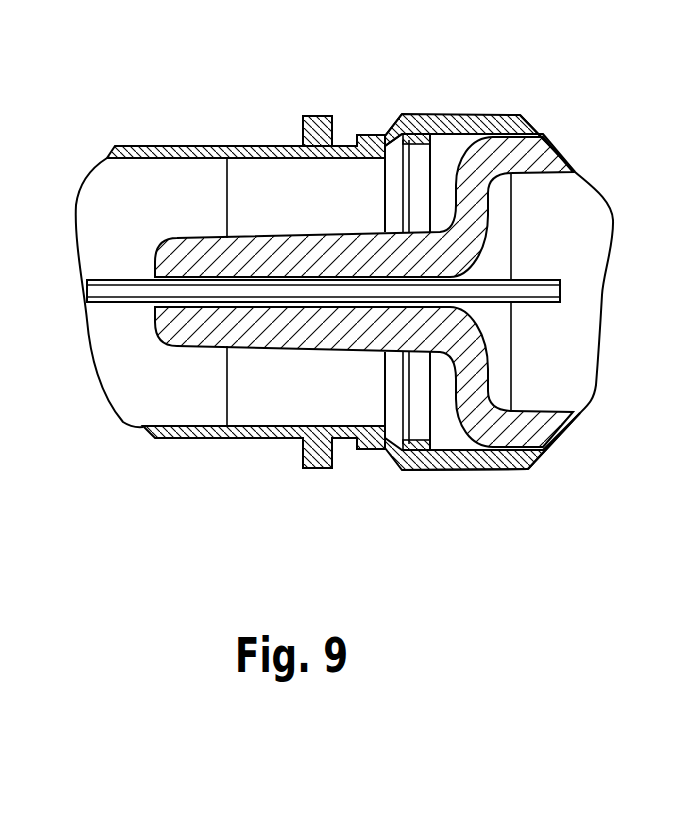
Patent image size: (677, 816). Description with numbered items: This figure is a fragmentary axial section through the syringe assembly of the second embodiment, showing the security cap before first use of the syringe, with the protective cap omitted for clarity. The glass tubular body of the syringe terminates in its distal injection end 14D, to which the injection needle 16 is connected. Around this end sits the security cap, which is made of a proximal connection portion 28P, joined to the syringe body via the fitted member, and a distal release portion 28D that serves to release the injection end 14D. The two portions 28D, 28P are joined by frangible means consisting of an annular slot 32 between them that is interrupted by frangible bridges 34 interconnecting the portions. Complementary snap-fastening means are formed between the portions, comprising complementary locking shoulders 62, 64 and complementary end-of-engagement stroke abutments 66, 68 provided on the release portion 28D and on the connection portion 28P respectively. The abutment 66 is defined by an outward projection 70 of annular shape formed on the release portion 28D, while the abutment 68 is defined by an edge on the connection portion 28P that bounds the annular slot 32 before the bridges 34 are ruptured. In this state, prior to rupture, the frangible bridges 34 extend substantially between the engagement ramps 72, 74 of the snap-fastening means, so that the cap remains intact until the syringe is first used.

The distal release portion 28D is at (172, 146).
The proximal connection portion 28P is at (523, 115).
The distal end of the tubular body 14D is at (484, 233).
The injection needle 16 is at (127, 303).
The outward projection 70 is at (325, 124).
The end-of-engagement stroke abutment 66 is at (344, 144).
The locking shoulder 62 is at (357, 447).
The frangible bridges 34 is at (388, 135).
The engagement ramp 74 is at (400, 141).
The engagement ramp 72 is at (382, 450).
The annular slot 32 is at (392, 444).
The end-of-engagement stroke abutment 68 is at (418, 468).
The locking shoulder 64 is at (437, 450).